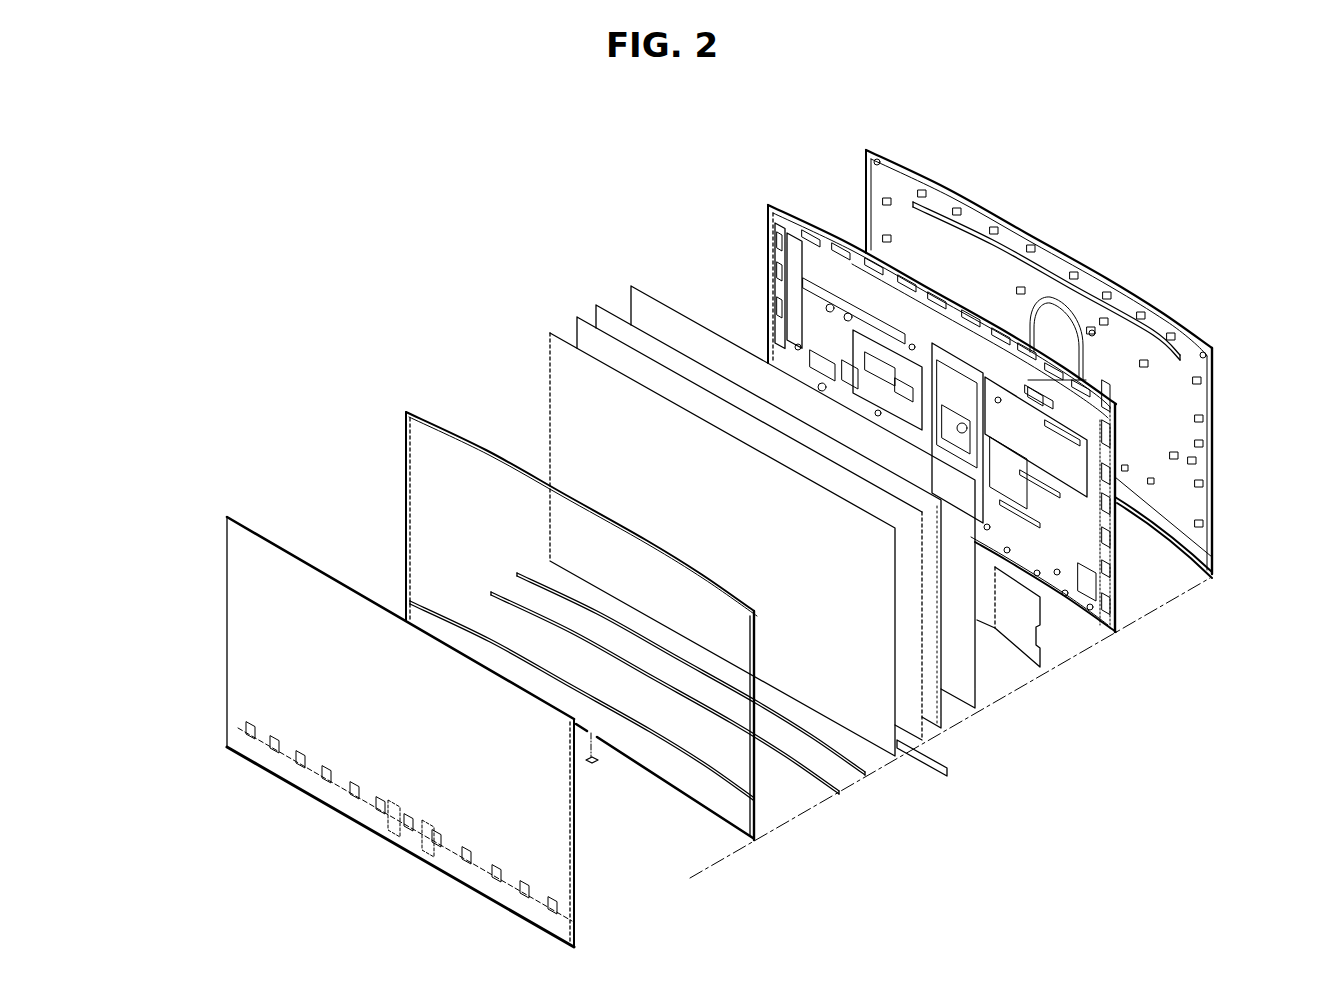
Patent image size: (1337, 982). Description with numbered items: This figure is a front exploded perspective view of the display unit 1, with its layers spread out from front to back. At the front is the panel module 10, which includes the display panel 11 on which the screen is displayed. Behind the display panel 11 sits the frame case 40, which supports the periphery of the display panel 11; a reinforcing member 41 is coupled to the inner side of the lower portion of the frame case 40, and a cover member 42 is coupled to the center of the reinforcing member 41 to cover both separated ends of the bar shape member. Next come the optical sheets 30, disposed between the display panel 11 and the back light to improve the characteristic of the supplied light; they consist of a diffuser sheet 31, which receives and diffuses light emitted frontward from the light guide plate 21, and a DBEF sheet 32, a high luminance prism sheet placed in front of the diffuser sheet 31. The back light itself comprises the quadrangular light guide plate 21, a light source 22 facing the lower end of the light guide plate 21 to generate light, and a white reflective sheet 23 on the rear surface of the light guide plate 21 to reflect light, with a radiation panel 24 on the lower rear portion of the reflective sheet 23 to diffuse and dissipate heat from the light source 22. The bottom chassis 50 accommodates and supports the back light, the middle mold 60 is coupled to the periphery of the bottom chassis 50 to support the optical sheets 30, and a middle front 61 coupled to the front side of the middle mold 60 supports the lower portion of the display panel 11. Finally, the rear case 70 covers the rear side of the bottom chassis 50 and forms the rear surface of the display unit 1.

The display unit 1 is at (670, 124).
The panel module 10 is at (389, 718).
The display panel 11 is at (555, 829).
The light guide plate 21 is at (945, 713).
The light source 22 is at (950, 772).
The reflective sheet 23 is at (977, 677).
The radiation panel 24 is at (1045, 651).
The optical sheets 30 is at (694, 487).
The diffuser sheet 31 is at (725, 498).
The dual brightness enhancement film (DBEF) sheet 32 is at (556, 374).
The frame case 40 is at (615, 653).
The reinforcing member 41 is at (703, 760).
The cover member 42 is at (592, 765).
The bottom chassis 50 is at (1118, 618).
The middle mold 60 is at (866, 776).
The middle front 61 is at (842, 797).
The rear case 70 is at (1218, 573).